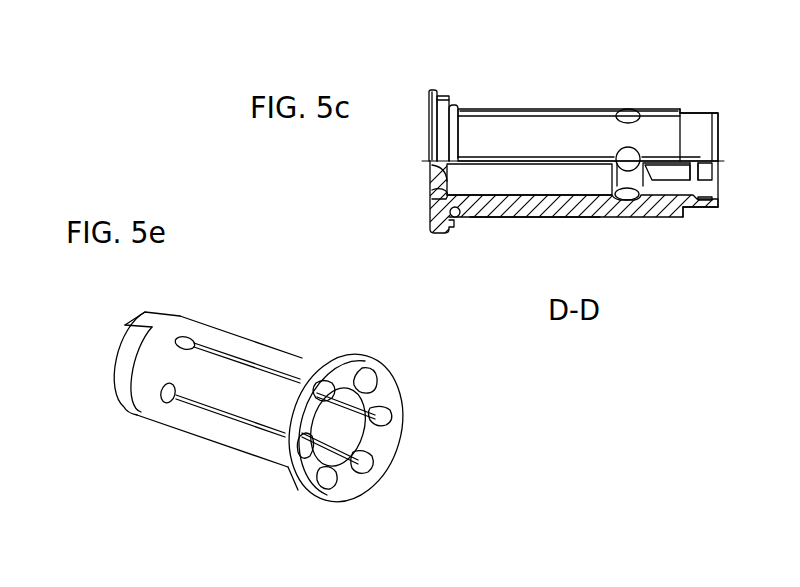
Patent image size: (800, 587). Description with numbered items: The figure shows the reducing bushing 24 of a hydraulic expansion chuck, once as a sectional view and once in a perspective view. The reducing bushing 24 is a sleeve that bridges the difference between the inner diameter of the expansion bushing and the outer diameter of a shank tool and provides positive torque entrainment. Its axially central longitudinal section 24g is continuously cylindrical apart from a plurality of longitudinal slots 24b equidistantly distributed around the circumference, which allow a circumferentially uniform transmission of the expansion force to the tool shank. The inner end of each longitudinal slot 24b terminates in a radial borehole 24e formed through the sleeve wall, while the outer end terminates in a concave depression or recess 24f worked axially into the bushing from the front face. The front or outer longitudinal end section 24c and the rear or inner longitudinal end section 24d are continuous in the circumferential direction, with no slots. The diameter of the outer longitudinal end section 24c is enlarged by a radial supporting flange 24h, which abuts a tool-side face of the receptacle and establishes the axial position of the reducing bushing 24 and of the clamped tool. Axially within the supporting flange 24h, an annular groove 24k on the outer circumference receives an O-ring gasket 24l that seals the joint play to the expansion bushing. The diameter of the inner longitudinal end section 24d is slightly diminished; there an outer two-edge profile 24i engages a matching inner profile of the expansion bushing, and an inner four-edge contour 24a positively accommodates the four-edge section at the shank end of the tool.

In FIG. 5c, the reducing bushing 24 is at (618, 222).
In FIG. 5e, the reducing bushing 24 is at (174, 458).
In FIG. 5c, the inner four-edge contour 24a is at (676, 222).
In FIG. 5c, the longitudinal slots 24b is at (553, 107).
In FIG. 5e, the longitudinal slots 24b is at (245, 358).
In FIG. 5c, the front or outer longitudinal end section 24c is at (445, 242).
In FIG. 5e, the front or outer longitudinal end section 24c is at (290, 489).
In FIG. 5c, the rear or inner longitudinal end section 24d is at (703, 216).
In FIG. 5e, the rear or inner longitudinal end section 24d is at (115, 422).
In FIG. 5c, the radial borehole 24e is at (636, 108).
In FIG. 5e, the radial borehole 24e is at (192, 342).
In FIG. 5c, the concave depression or recess 24f is at (432, 199).
In FIG. 5e, the concave depression or recess 24f is at (372, 384).
In FIG. 5c, the axially central longitudinal section 24g is at (538, 225).
In FIG. 5e, the axially central longitudinal section 24g is at (360, 324).
In FIG. 5c, the radial supporting flange 24h is at (436, 87).
In FIG. 5c, the outer two-edge profile 24i is at (700, 110).
In FIG. 5e, the outer two-edge profile 24i is at (143, 313).
In FIG. 5c, the annular groove 24k is at (490, 220).
In FIG. 5c, the O-ring gasket 24l is at (456, 103).